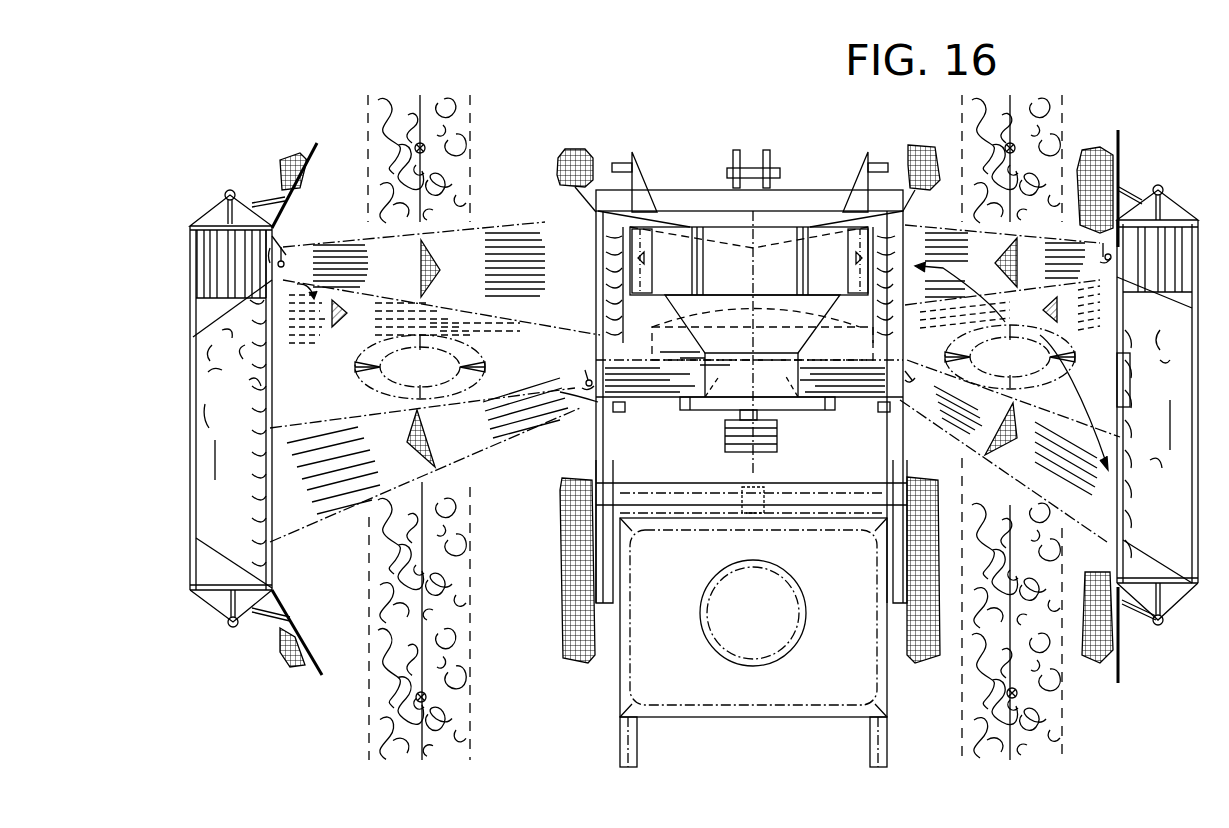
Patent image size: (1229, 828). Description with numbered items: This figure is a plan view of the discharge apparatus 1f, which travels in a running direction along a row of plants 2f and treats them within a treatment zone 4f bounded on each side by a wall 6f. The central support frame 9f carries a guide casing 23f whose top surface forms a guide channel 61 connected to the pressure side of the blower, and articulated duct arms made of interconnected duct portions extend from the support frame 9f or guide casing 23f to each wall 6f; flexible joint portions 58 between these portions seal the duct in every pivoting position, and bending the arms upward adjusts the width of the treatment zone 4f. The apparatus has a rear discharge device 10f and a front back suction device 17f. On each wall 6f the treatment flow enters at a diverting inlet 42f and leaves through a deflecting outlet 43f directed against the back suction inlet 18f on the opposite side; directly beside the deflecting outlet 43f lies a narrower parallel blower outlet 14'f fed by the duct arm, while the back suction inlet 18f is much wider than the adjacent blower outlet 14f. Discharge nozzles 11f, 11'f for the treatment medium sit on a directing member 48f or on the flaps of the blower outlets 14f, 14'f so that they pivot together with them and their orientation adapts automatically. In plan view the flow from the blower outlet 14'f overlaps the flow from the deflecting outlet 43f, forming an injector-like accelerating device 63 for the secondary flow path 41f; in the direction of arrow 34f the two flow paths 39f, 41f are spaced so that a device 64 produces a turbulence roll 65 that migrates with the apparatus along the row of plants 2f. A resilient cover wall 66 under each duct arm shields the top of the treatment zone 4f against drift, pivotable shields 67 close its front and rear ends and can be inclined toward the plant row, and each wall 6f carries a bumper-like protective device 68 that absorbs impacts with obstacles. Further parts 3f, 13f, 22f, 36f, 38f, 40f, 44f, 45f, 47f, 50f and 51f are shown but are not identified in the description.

The discharge apparatus 1f is at (721, 112).
The row of plants 2f is at (472, 114).
The right trailer/wagon 3f is at (1138, 173).
The treatment zone 4f is at (362, 518).
The wall 6f is at (200, 578).
The support frame 9f is at (807, 180).
The rear discharge device 10f is at (556, 413).
The discharge nozzles 11f is at (586, 383).
The discharge nozzles 11'f is at (302, 245).
The drive motor 13f is at (803, 435).
The blower outlet 14f is at (595, 405).
The parallel blower outlet 14'f is at (298, 224).
The front back suction device 17f is at (1040, 335).
The back suction inlet 18f is at (598, 290).
The right track wheel 22f is at (905, 663).
The guide casing 23f is at (660, 393).
The arrow 34f is at (662, 617).
The header housing 36f is at (745, 300).
The mounting plate 38f is at (830, 392).
The flow path 39f is at (480, 453).
The wagon door 40f is at (1108, 405).
The secondary flow path 41f is at (482, 228).
The diverting inlet 42f is at (280, 550).
The deflecting outlet 43f is at (283, 338).
The wagon side wall 44f is at (253, 490).
The wagon interior 45f is at (225, 400).
The bracket 47f is at (598, 410).
The directing member 48f is at (590, 378).
The front wheel 50f is at (578, 198).
The guide element 51f is at (650, 290).
The flexible joint portions 58 is at (655, 237).
The guide channel 61 is at (828, 305).
The accelerating device 63 is at (319, 318).
The device for producing a turbulence roll 64 is at (457, 289).
The turbulence roll 65 is at (479, 365).
The cover wall 66 is at (570, 660).
The shields 67 is at (317, 146).
The protective device 68 is at (238, 627).